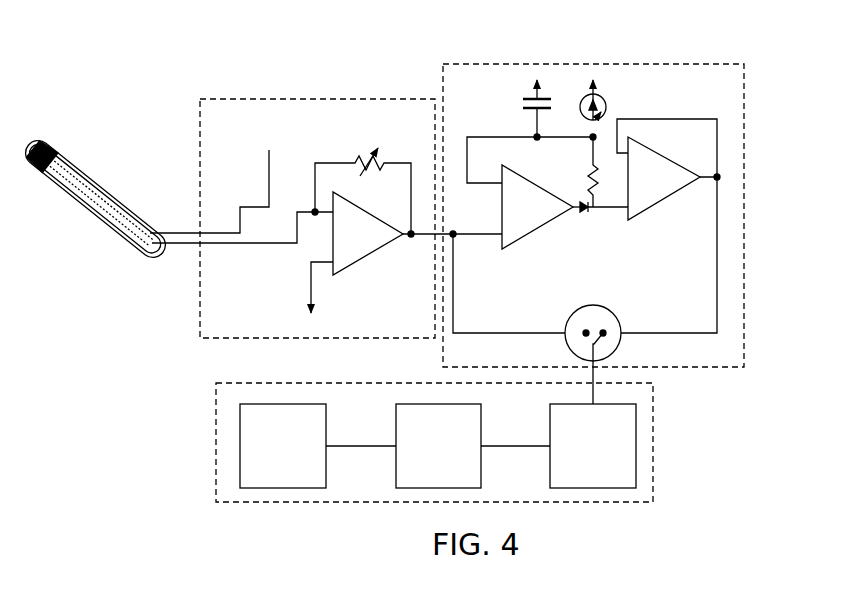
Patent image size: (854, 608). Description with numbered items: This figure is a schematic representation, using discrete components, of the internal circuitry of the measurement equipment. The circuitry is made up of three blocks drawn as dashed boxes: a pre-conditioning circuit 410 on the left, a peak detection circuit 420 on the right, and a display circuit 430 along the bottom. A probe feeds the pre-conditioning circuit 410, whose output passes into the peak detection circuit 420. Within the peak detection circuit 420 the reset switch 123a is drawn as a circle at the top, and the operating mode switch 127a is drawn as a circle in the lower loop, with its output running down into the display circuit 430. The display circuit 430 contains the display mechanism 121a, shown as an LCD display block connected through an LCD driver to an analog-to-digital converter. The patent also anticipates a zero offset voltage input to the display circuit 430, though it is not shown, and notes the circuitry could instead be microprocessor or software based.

The pre-conditioning circuit 410 is at (263, 89).
The peak detection circuit 420 is at (502, 61).
The display circuit 430 is at (207, 452).
The display mechanism 121a is at (248, 397).
The reset switch 123a is at (607, 97).
The operating mode switch 127a is at (625, 349).